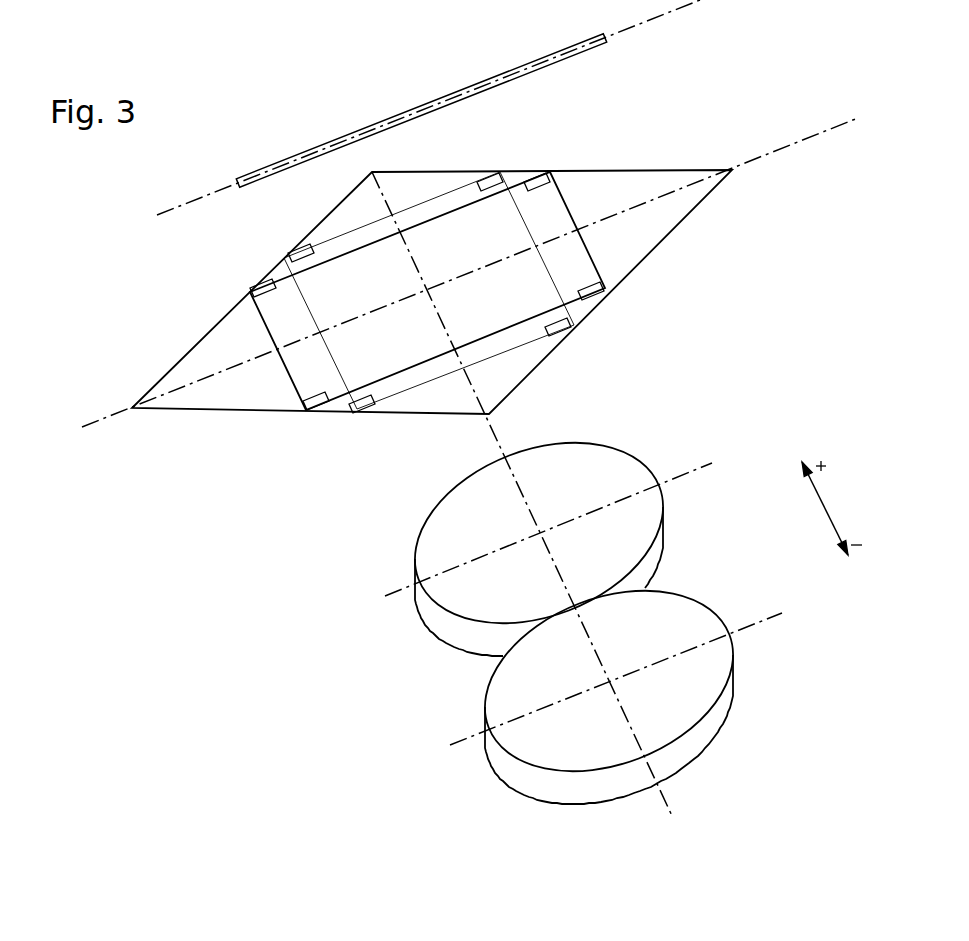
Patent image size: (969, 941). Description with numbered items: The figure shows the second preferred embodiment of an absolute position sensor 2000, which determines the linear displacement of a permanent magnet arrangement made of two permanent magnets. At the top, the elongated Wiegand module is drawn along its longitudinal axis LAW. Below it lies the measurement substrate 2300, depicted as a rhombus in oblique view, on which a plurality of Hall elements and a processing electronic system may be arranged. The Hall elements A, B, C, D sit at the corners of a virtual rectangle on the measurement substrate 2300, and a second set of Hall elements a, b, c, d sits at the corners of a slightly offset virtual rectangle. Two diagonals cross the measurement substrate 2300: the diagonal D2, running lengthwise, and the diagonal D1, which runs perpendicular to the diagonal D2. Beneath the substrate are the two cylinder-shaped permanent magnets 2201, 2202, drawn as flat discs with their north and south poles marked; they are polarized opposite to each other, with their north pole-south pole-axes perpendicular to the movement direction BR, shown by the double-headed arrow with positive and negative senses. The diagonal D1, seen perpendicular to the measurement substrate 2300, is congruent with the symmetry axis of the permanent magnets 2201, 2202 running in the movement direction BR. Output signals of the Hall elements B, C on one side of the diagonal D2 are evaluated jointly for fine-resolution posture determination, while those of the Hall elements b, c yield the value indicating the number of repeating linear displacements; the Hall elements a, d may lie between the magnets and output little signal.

The absolute position sensor 2000 is at (596, 28).
The longitudinal axis of the Wiegand module LAW is at (650, 22).
The diagonal of the measurement substrate D1 is at (478, 390).
The diagonal of the measurement substrate D2 is at (773, 152).
The measurement substrate 2300 is at (668, 264).
The cylinder-shaped permanent magnet 2202 is at (664, 529).
The cylinder-shaped permanent magnet 2201 is at (733, 675).
The movement direction BR is at (832, 508).
The Hall element A is at (553, 186).
The Hall element B is at (600, 277).
The Hall element C is at (303, 397).
The Hall element D is at (259, 302).
The Hall element a is at (479, 185).
The Hall element b is at (567, 335).
The Hall element c is at (375, 398).
The Hall element d is at (308, 245).